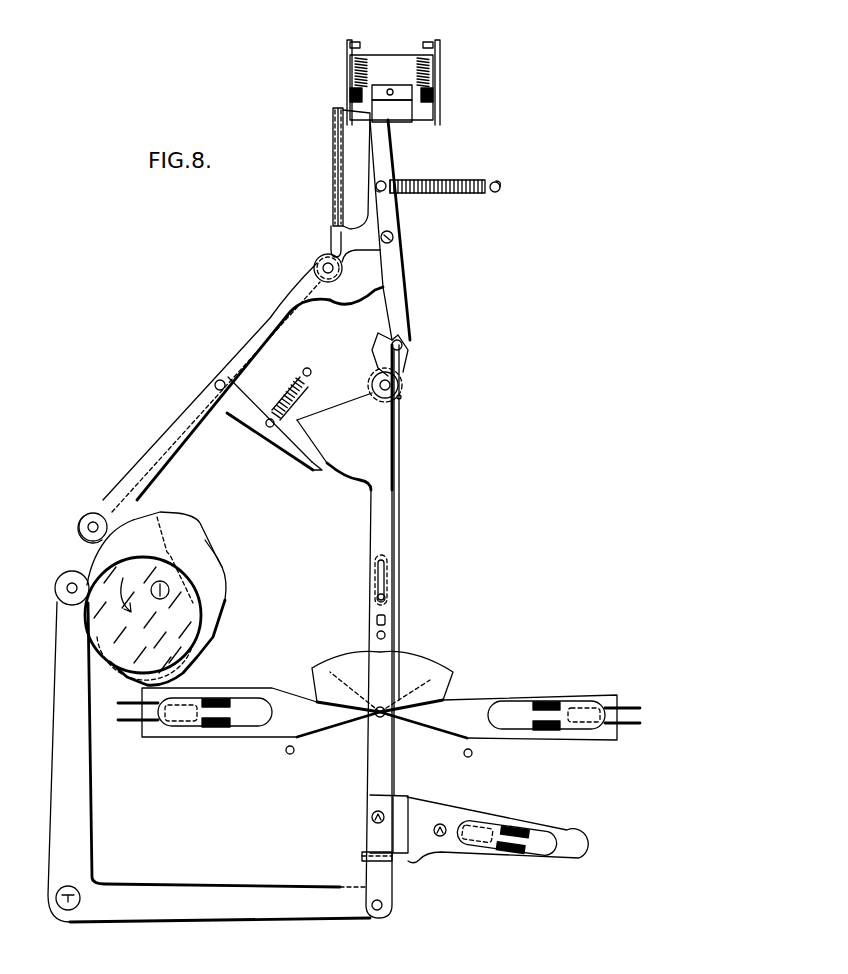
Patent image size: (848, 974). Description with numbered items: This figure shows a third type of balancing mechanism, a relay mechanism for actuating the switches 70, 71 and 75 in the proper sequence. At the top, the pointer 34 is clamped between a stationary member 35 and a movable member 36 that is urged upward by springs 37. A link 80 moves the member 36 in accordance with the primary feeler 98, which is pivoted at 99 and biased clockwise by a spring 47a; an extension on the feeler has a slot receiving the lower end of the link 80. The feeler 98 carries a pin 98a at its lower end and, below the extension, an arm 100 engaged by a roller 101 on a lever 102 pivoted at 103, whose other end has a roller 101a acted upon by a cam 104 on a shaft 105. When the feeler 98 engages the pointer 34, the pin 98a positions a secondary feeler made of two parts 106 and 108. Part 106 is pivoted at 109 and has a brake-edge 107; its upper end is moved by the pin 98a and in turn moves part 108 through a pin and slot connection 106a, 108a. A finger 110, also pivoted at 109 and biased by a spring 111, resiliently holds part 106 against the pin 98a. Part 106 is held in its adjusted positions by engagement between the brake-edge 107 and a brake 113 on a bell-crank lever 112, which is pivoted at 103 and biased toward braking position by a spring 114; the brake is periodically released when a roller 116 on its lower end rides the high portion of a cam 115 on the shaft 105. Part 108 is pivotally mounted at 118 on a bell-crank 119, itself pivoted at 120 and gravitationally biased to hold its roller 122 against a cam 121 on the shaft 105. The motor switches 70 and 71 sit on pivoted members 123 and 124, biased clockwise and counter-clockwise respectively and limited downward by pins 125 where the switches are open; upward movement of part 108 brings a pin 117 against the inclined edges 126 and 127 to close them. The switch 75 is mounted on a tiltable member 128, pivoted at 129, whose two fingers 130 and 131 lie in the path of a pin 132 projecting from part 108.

The pointer 34 is at (391, 89).
The stationary member 35 is at (377, 60).
The movable member 36 is at (412, 112).
The springs 37 is at (350, 94).
The spring 47a is at (440, 182).
The motor switch 70 is at (245, 705).
The motor switch 71 is at (515, 722).
The switch 75 is at (546, 834).
The link 80 is at (333, 172).
The primary feeler 98 is at (396, 284).
The pin 98a is at (401, 342).
The pivot 99 is at (392, 234).
The arm 100 is at (348, 298).
The roller 101 is at (322, 256).
The roller 101a is at (107, 505).
The lever 102 is at (264, 308).
The pivot 103 is at (219, 378).
The cam 104 is at (147, 520).
The shaft 105 is at (165, 583).
The first part of secondary feeler 106 is at (390, 514).
The pin of pin-and-slot connection 106a is at (385, 598).
The brake-edge 107 is at (345, 474).
The second part of secondary feeler 108 is at (374, 793).
The slot of pin-and-slot connection 108a is at (386, 620).
The pivot 109 is at (402, 385).
The finger 110 is at (406, 360).
The spring 111 is at (402, 398).
The bell-crank lever 112 is at (286, 443).
The brake 113 is at (318, 471).
The spring 114 is at (302, 370).
The cam 115 is at (207, 545).
The roller 116 is at (80, 522).
The pin 117 is at (377, 718).
The pivot 118 is at (385, 910).
The bell-crank 119 is at (195, 888).
The pivot 120 is at (75, 908).
The cam 121 is at (120, 658).
The roller 122 is at (57, 585).
The pivoted member 123 is at (237, 740).
The pivoted member 124 is at (485, 700).
The pins 125 is at (287, 753).
The inclined edge 126 is at (345, 727).
The inclined edge 127 is at (426, 725).
The tiltable member 128 is at (480, 816).
The pivot 129 is at (443, 838).
The finger 130 is at (407, 800).
The finger 131 is at (385, 862).
The pin 132 is at (372, 822).